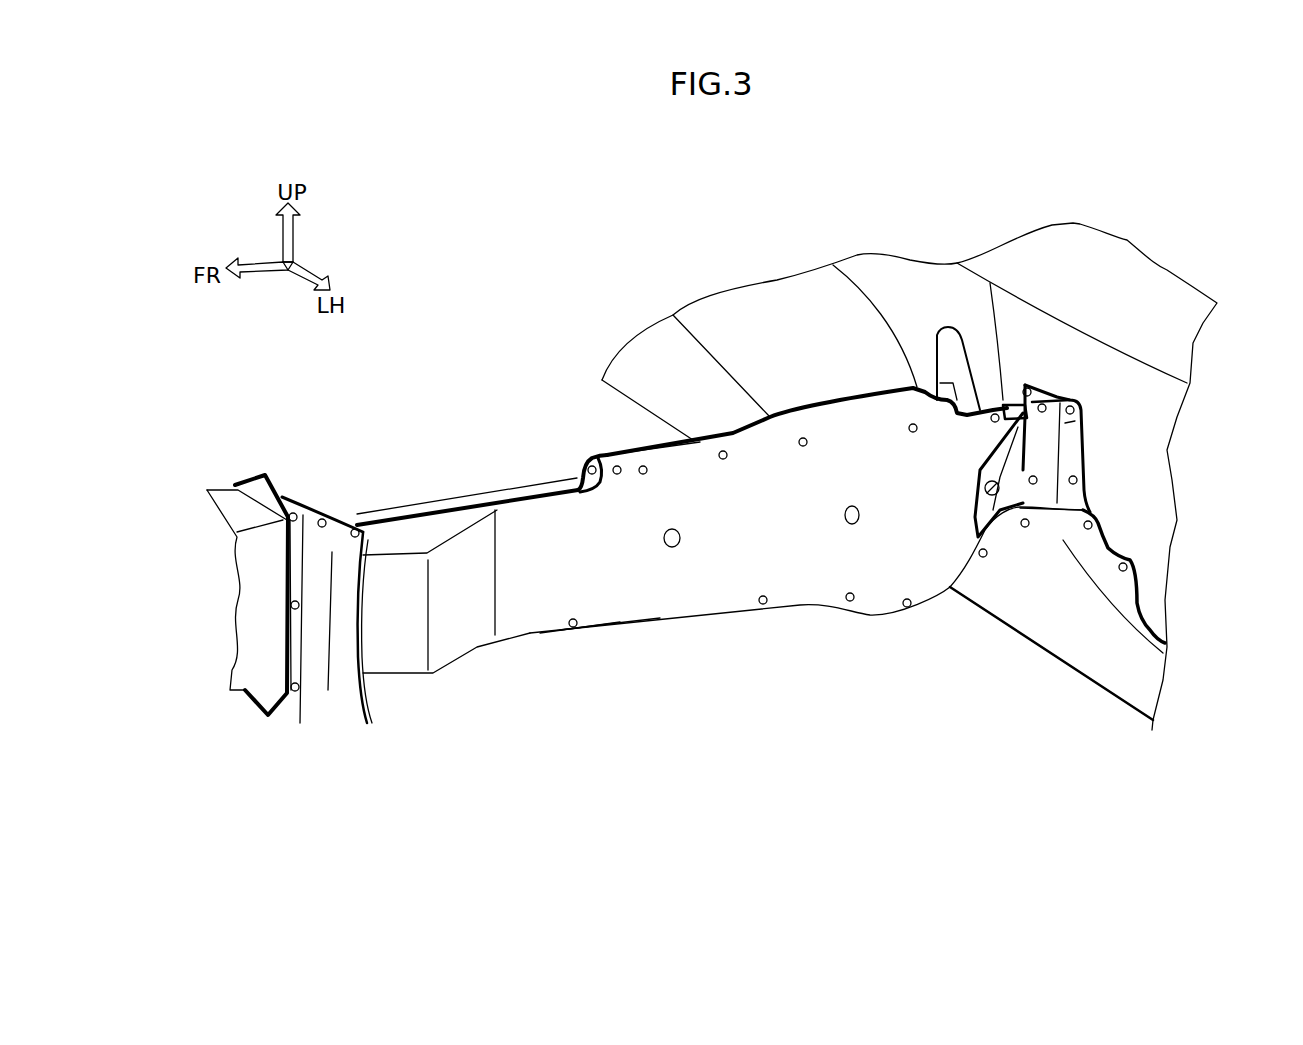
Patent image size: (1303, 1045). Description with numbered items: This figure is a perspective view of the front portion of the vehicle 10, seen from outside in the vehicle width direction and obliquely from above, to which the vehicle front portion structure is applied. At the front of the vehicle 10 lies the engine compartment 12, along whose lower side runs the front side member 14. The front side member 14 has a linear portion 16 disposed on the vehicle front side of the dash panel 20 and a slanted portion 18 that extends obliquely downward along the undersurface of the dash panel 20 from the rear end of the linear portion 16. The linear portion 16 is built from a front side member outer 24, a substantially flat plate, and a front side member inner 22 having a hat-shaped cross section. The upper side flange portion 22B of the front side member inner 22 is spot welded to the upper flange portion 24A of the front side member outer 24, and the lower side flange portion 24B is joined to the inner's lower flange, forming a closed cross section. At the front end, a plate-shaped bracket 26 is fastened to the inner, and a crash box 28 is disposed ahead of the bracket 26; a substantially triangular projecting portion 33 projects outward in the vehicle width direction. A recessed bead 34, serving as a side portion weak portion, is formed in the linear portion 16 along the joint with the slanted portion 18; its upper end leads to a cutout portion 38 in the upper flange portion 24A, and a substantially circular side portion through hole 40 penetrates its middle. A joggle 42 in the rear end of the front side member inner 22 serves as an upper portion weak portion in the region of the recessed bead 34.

The vehicle 10 is at (525, 337).
The engine compartment 12 is at (390, 384).
The front side member 14 is at (682, 683).
The linear portion 16 is at (757, 618).
The slanted portion 18 is at (1078, 678).
The dash panel 20 is at (1143, 417).
The front side member inner 22 is at (517, 485).
The upper side flange portion 22B is at (597, 457).
The front side member outer 24 is at (572, 635).
The upper flange portion 24A is at (620, 447).
The lower side flange portion 24B is at (620, 622).
The bracket 26 is at (327, 513).
The crash box 28 is at (216, 488).
The projecting portion 33 is at (433, 673).
The recessed bead 34 is at (990, 537).
The cutout portion 38 is at (1017, 390).
The side portion through hole 40 is at (1090, 490).
The joggle 42 is at (1013, 403).